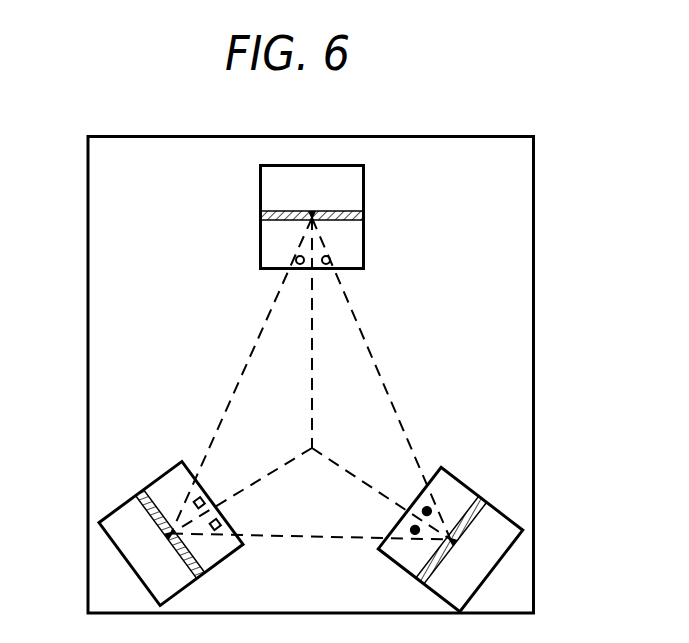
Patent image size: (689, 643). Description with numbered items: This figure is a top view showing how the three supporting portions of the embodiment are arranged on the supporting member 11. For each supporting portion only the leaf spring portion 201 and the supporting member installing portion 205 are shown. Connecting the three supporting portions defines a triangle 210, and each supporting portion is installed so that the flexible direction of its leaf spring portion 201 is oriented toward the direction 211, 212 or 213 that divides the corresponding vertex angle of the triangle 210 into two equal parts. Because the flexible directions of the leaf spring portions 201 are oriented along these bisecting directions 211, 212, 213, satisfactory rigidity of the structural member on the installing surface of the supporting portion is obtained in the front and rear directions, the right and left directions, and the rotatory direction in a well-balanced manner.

The supporting member 11 is at (526, 201).
The leaf spring portion 201 is at (345, 210).
The supporting member installing portion 205 is at (347, 172).
The triangle 210 is at (367, 339).
The direction 211 is at (315, 313).
The direction 212 is at (347, 468).
The direction 213 is at (270, 475).